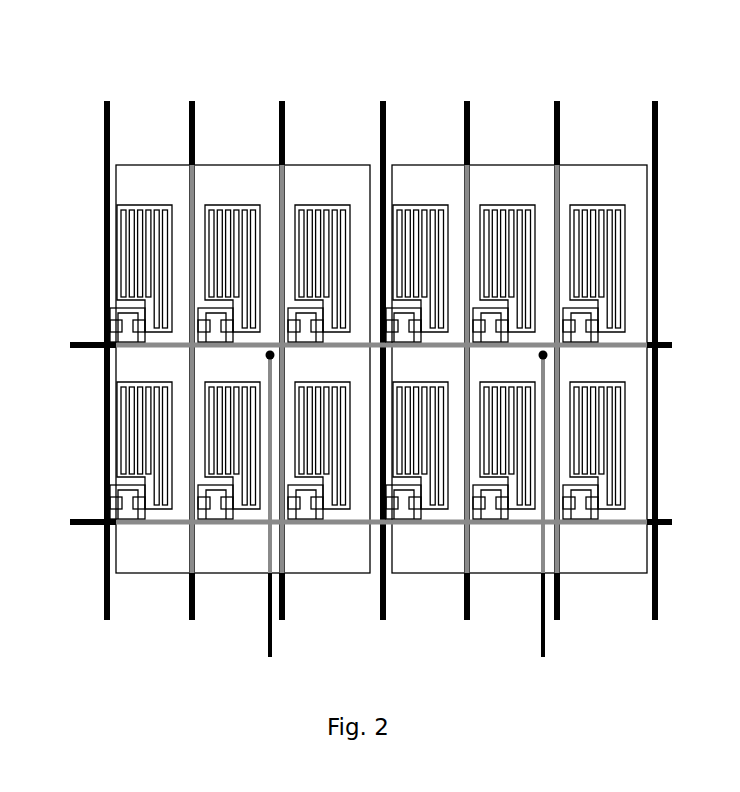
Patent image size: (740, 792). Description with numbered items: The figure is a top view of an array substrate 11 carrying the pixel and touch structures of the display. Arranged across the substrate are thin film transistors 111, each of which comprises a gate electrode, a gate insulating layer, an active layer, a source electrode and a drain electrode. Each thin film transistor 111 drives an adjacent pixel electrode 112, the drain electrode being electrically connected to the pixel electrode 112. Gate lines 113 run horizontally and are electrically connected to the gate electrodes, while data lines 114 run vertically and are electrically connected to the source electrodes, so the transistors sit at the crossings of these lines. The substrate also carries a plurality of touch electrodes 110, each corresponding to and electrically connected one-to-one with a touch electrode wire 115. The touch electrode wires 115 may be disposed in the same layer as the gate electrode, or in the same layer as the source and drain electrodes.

The array substrate 11 is at (165, 51).
The touch electrode 110 is at (138, 555).
The thin film transistor 111 is at (112, 487).
The pixel electrode 112 is at (122, 250).
The gate line 113 is at (92, 343).
The data line 114 is at (655, 101).
The touch electrode wire 115 is at (272, 628).